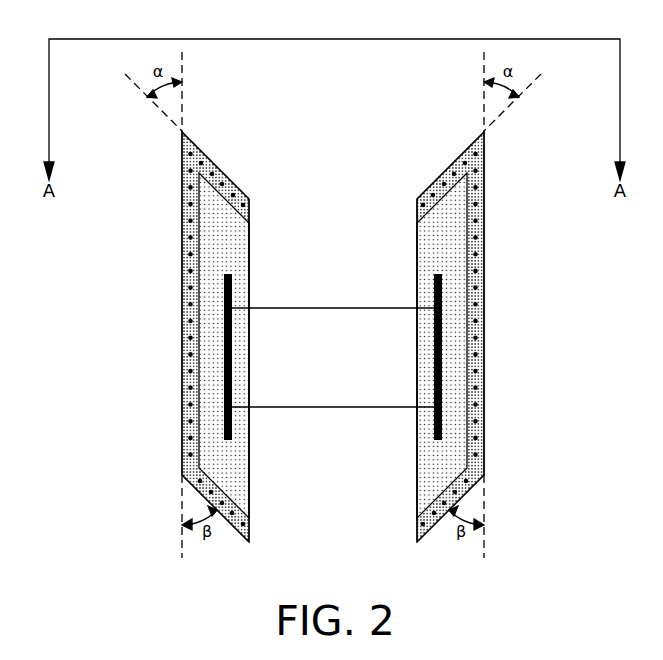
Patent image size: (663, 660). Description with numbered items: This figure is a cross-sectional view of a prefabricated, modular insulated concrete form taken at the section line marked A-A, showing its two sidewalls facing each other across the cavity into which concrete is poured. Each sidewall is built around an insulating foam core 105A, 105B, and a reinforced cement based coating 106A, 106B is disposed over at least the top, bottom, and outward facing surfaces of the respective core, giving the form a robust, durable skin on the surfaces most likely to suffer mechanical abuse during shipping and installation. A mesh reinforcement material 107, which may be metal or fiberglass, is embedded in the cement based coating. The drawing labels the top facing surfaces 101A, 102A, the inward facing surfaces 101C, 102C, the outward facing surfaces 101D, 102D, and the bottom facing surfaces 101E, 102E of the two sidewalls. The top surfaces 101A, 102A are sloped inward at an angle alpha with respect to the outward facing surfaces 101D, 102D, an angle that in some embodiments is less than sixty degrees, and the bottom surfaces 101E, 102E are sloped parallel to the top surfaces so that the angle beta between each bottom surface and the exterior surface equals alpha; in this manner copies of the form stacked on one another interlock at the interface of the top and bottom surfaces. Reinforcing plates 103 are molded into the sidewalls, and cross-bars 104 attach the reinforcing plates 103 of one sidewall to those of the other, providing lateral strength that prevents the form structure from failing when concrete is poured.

The top facing surface 101A is at (218, 168).
The inward facing surface 101C is at (252, 466).
The outward facing surface 101D is at (181, 263).
The bottom facing surface 101E is at (233, 528).
The top facing surface 102A is at (448, 168).
The inward facing surface 102C is at (416, 494).
The outward facing surface 102D is at (486, 418).
The bottom facing surface 102E is at (433, 528).
The reinforcing plate 103 is at (233, 293).
The cross-bar 104 is at (301, 310).
The insulating foam core 105A is at (236, 262).
The insulating foam core 105B is at (425, 263).
The reinforced cement based coating 106A is at (181, 316).
The reinforced cement based coating 106B is at (486, 310).
The mesh reinforcement material 107 is at (189, 390).